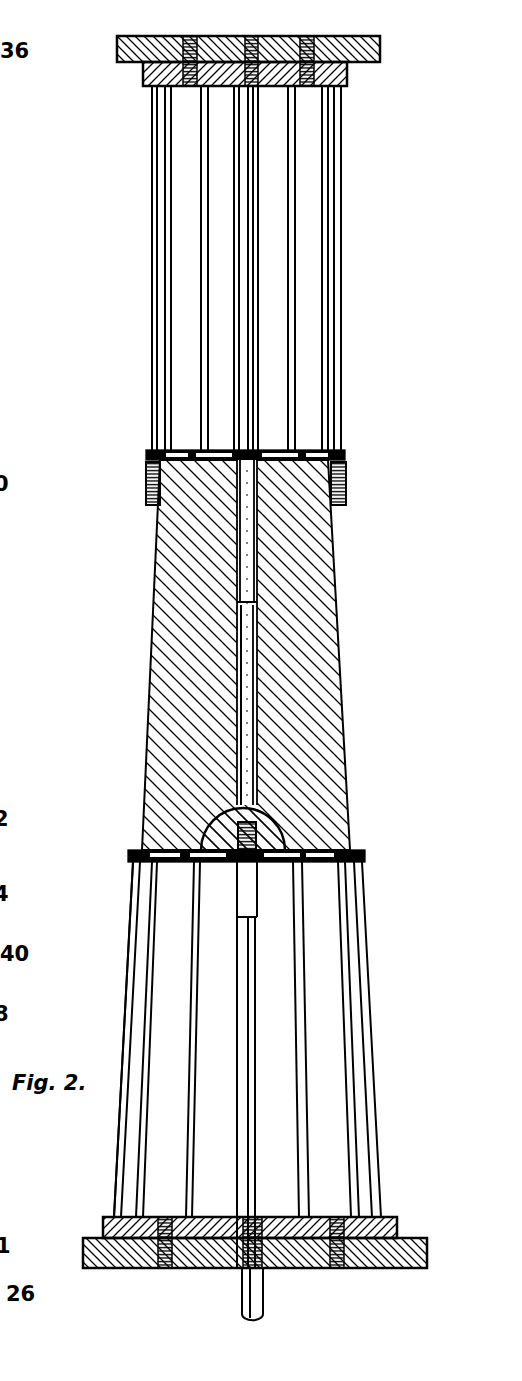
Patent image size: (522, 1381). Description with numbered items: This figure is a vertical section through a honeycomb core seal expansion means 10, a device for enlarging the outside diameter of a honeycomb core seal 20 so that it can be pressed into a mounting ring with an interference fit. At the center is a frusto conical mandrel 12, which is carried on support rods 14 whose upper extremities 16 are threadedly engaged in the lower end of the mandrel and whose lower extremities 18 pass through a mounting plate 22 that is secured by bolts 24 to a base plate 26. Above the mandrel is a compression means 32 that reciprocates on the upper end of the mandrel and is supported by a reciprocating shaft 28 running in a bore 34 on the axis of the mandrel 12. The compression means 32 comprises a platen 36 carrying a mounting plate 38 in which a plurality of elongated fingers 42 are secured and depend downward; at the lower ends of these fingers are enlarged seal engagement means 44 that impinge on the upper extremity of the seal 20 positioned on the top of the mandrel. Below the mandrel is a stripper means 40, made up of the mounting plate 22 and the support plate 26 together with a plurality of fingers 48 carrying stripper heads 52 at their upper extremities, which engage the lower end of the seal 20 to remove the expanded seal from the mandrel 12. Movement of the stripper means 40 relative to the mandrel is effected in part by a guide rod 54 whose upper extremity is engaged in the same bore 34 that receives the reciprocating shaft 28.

The honeycomb core seal expansion means 10 is at (116, 650).
The frusto conical mandrel 12 is at (158, 592).
The support rods 14 is at (240, 893).
The upper extremities of support rods 16 is at (290, 818).
The lower extremities of support rods 18 is at (263, 1300).
The honeycomb core seal 20 is at (348, 485).
The mounting plate 22 is at (106, 1216).
The bolts 24 is at (341, 1272).
The base plate 26 is at (430, 1246).
The reciprocating shaft 28 is at (253, 400).
The compression means 32 is at (150, 297).
The bore 34 is at (257, 610).
The platen 36 is at (382, 46).
The mounting plate 38 is at (349, 80).
The stripper means 40 is at (120, 965).
The elongated fingers 42 is at (200, 222).
The seal engagement means 44 is at (172, 446).
The fingers 48 is at (150, 1018).
The stripper heads 52 is at (140, 850).
The guide rod 54 is at (236, 750).